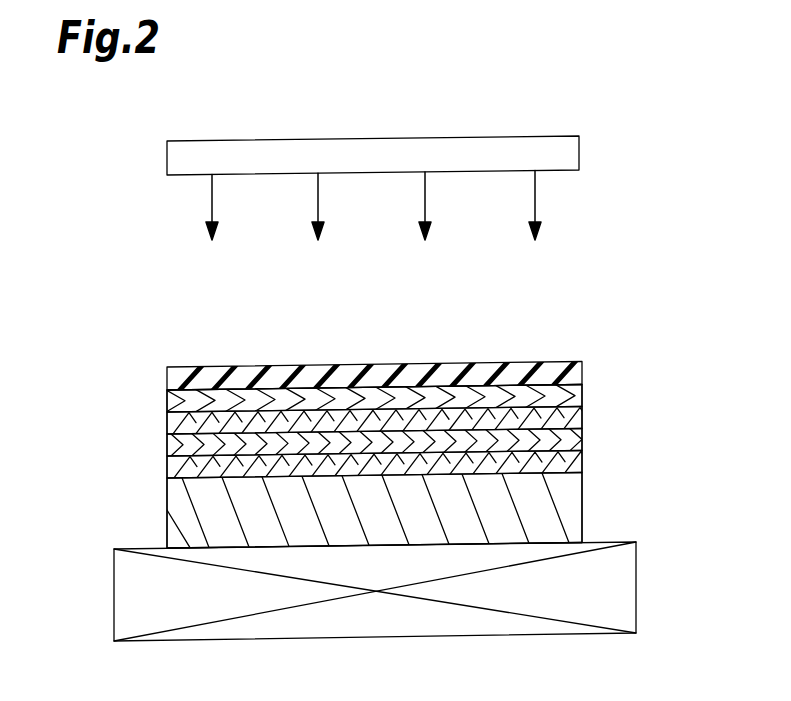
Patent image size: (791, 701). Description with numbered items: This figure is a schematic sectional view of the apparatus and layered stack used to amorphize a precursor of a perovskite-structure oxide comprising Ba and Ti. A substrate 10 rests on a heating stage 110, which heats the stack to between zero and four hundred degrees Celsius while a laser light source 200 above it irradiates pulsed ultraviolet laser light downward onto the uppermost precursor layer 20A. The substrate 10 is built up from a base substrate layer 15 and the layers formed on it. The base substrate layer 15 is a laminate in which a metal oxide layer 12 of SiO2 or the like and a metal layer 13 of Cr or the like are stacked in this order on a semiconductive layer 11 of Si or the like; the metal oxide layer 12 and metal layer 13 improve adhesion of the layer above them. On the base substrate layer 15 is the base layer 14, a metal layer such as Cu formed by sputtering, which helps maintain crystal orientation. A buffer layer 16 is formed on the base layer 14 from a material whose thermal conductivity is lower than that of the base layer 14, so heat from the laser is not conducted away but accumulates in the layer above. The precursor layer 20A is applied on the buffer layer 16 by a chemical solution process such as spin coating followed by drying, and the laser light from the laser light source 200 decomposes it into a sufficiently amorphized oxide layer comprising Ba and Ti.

The laser light source 200 is at (577, 152).
The precursor layer 20A is at (572, 376).
The substrate 10 is at (445, 461).
The buffer layer 16 is at (571, 398).
The base layer 14 is at (571, 421).
The base substrate layer 15 is at (424, 487).
The metal layer 13 is at (573, 444).
The metal oxide layer 12 is at (573, 466).
The semiconductive layer 11 is at (404, 510).
The heating stage 110 is at (627, 583).